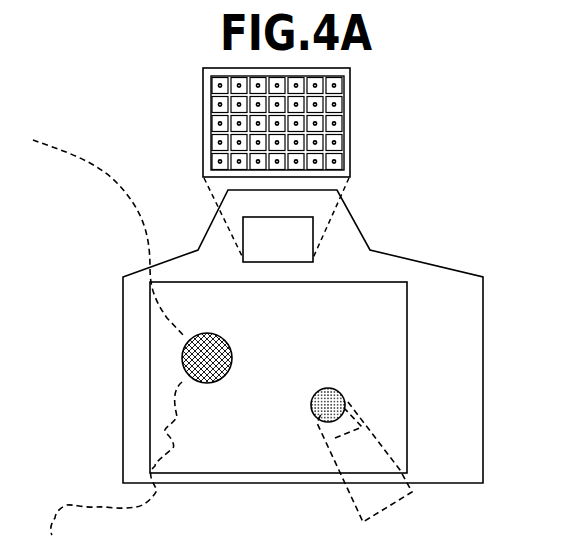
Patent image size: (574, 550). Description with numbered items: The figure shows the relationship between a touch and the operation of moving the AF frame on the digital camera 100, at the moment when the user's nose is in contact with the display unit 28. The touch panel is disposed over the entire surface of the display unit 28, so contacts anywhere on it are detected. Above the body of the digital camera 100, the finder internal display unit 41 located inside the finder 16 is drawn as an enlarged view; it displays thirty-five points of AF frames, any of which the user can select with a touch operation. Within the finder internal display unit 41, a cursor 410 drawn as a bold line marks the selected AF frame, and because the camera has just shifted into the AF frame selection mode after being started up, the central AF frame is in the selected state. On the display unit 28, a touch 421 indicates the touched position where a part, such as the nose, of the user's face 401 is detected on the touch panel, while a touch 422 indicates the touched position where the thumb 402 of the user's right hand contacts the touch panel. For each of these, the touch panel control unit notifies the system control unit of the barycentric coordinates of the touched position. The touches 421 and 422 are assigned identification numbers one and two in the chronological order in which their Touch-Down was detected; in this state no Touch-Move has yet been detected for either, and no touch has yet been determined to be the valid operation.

The digital camera 100 is at (442, 267).
The display unit 28 is at (377, 293).
The finder 16 is at (262, 217).
The finder internal display unit 41 is at (279, 122).
The cursor 410 is at (290, 128).
The face 401 is at (118, 198).
The touch 421 is at (228, 338).
The touch 422 is at (329, 388).
The thumb 402 is at (387, 502).